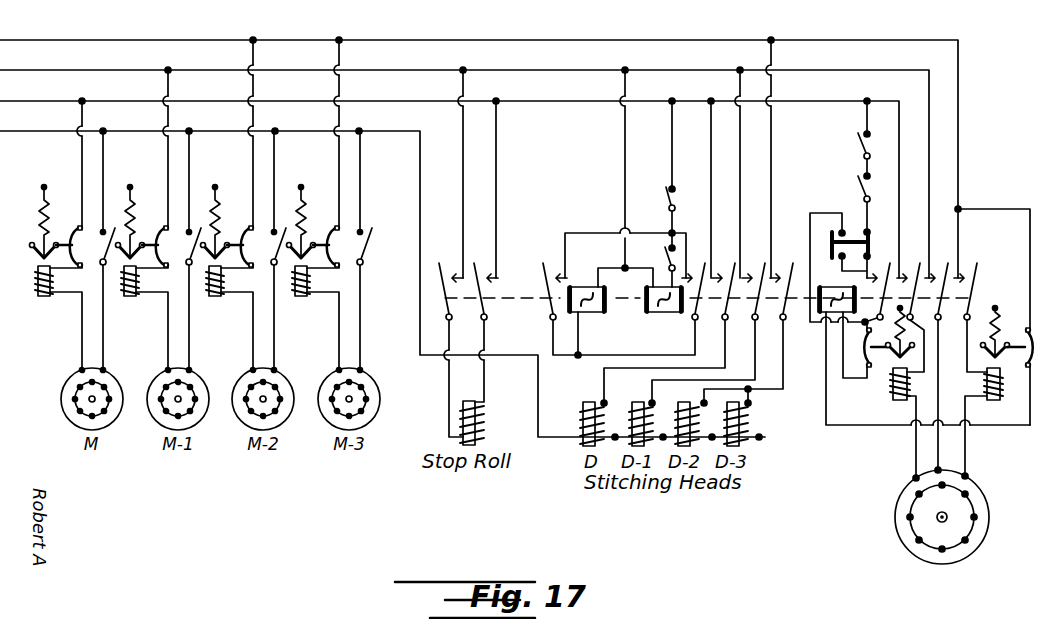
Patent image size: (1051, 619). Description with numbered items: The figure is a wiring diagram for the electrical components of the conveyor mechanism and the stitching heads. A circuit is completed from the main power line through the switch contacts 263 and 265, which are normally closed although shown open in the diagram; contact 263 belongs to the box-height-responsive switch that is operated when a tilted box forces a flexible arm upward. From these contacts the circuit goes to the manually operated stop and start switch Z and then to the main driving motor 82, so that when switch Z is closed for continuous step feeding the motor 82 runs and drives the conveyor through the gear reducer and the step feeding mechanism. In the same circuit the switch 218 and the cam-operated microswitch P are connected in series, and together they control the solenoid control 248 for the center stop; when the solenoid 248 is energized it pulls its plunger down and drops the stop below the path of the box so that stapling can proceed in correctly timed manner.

The switch contact 265 is at (860, 140).
The switch contact element 263 is at (860, 180).
The switch 218 is at (669, 200).
The cam-operated microswitch P is at (668, 257).
The manually operated stop and start switch Z is at (874, 243).
The solenoid control 248 is at (478, 441).
The electrical motor 82 is at (960, 553).